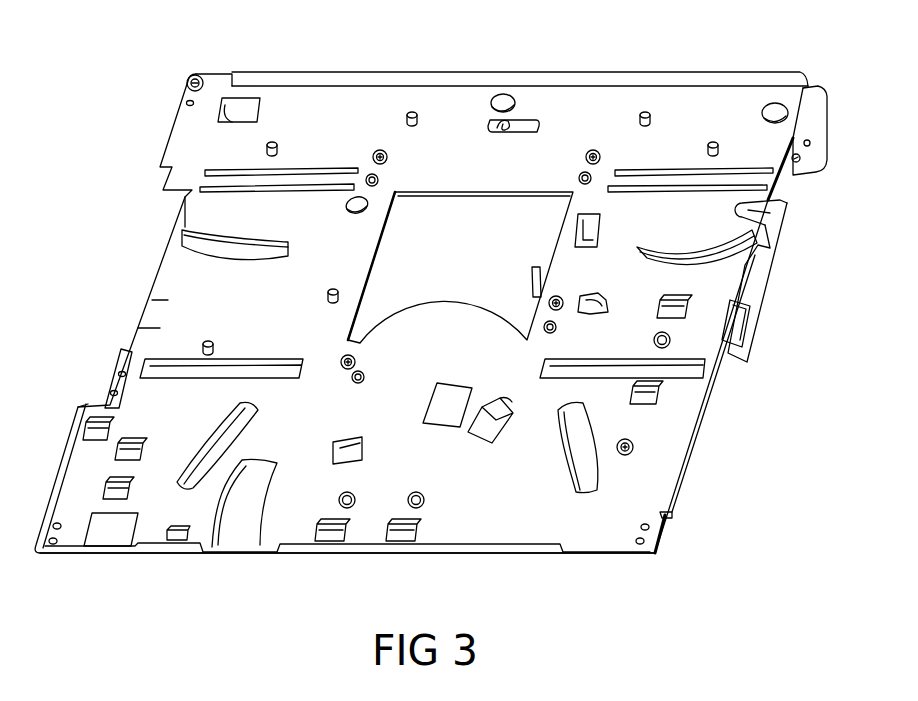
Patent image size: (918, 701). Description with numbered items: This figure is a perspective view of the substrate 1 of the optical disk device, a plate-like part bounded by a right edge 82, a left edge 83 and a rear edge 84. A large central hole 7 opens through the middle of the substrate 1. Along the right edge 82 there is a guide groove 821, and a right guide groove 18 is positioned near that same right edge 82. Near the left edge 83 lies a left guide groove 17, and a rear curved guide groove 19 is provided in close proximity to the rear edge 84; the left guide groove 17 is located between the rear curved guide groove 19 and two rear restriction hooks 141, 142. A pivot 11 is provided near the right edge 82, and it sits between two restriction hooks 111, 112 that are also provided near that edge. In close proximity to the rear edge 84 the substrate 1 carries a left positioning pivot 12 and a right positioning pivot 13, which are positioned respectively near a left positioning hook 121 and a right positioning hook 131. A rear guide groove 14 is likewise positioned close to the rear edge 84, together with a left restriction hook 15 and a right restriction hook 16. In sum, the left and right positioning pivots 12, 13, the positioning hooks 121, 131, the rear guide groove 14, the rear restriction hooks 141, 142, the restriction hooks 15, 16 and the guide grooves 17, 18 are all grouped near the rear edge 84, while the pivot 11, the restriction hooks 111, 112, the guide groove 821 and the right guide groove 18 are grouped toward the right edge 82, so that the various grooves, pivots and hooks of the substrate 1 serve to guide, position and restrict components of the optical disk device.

The substrate 1 is at (446, 128).
The central hole 7 is at (455, 328).
The pivot 11 is at (676, 338).
The restriction hook 111 is at (690, 282).
The restriction hook 112 is at (652, 405).
The left positioning pivot 12 is at (349, 497).
The left positioning hook 121 is at (331, 546).
The right positioning pivot 13 is at (419, 497).
The right positioning hook 131 is at (400, 546).
The rear guide groove 14 is at (105, 538).
The rear restriction hook 141 is at (143, 443).
The rear restriction hook 142 is at (128, 479).
The left restriction hook 15 is at (366, 443).
The right restriction hook 16 is at (503, 401).
The left guide groove 17 is at (214, 442).
The right guide groove 18 is at (590, 478).
The rear curved guide groove 19 is at (235, 540).
The right edge 82 is at (755, 293).
The guide groove 821 is at (781, 218).
The left edge 83 is at (52, 458).
The rear edge 84 is at (500, 554).